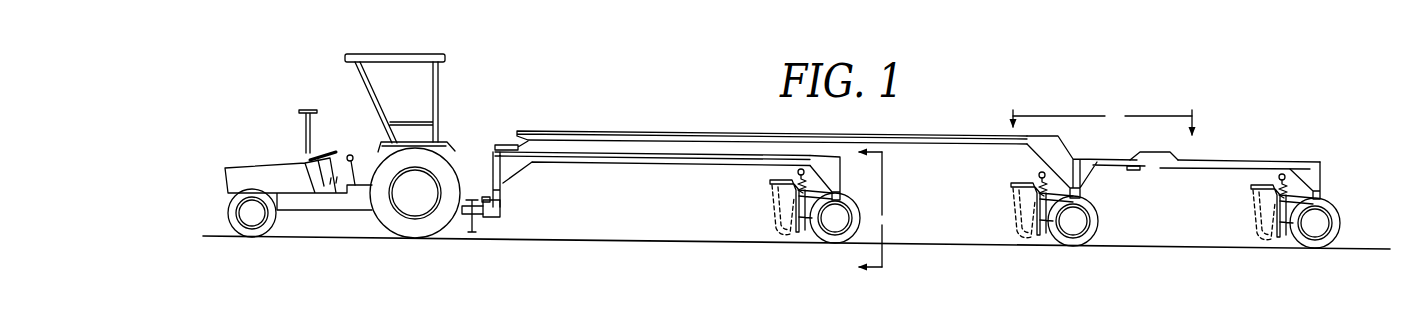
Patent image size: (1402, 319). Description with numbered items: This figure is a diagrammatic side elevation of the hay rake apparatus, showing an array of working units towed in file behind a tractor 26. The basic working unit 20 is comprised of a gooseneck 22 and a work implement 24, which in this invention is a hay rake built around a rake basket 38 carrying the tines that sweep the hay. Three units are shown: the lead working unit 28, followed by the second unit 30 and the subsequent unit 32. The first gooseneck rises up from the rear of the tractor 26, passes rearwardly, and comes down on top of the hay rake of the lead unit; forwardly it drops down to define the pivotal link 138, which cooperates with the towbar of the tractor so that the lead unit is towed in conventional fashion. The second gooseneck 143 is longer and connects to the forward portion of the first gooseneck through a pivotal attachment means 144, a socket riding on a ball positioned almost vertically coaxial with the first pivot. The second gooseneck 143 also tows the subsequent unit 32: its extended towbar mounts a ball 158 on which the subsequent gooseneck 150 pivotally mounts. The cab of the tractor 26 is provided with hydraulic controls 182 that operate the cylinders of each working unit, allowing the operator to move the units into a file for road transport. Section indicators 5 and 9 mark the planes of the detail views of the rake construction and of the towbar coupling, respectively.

The working unit 20 is at (916, 183).
The gooseneck 22 is at (612, 167).
The work implement 24 is at (766, 198).
The tractor 26 is at (250, 162).
The lead working unit 28 is at (845, 161).
The second unit 30 is at (1021, 153).
The subsequent unit 32 is at (1313, 153).
The rake basket 38 is at (773, 212).
The pivotal link 138 is at (476, 233).
The second gooseneck 143 is at (690, 132).
The pivotal attachment means 144 is at (497, 145).
The subsequent gooseneck 150 is at (1238, 161).
The ball 158 is at (1133, 156).
The hydraulic controls 182 is at (335, 182).
The section line 5- 5 is at (881, 209).
The section line 9- 9 is at (1100, 121).